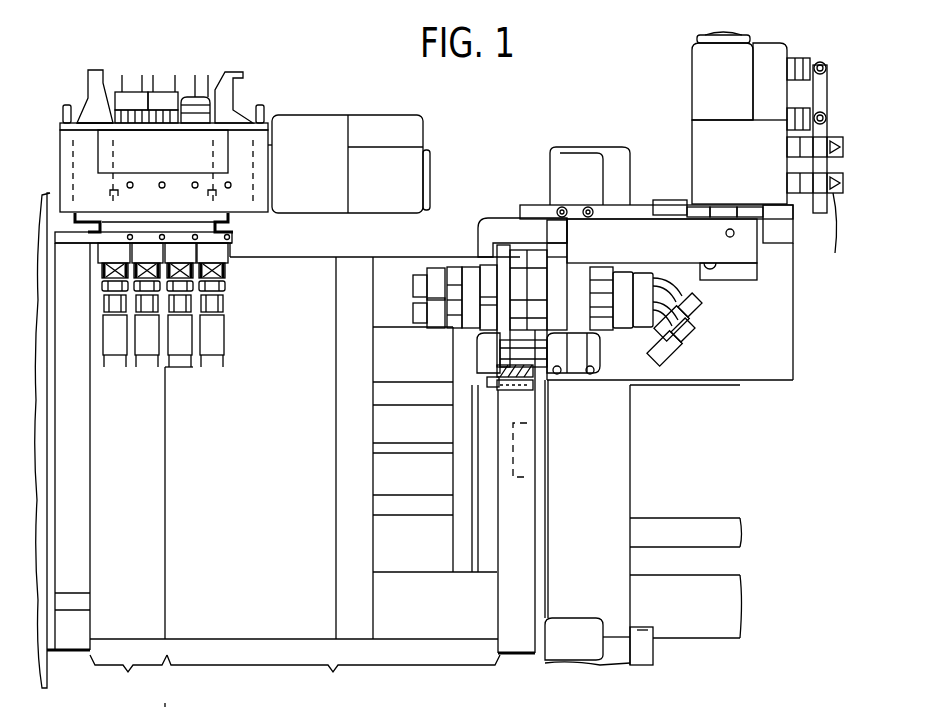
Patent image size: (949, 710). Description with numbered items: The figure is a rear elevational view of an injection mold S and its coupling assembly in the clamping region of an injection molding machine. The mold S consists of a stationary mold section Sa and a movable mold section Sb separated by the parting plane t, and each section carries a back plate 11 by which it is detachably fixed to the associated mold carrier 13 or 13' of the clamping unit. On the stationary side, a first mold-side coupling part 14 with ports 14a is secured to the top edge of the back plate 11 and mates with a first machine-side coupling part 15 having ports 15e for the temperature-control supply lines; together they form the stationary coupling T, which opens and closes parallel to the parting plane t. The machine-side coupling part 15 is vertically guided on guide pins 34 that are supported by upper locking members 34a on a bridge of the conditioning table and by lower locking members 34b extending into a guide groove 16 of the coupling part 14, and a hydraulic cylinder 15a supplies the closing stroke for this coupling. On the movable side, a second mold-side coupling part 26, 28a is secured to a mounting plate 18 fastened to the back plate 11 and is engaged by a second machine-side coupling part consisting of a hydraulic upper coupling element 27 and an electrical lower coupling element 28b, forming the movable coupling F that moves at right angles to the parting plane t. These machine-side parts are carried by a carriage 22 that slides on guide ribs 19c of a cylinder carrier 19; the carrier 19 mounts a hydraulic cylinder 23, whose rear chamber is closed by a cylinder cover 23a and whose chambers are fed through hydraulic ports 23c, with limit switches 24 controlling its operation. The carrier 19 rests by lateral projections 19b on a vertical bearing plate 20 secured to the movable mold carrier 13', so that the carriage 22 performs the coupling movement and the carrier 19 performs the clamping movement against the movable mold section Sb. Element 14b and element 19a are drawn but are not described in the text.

The back plate 11 is at (535, 549).
The stationary mold carrier 13 is at (275, 402).
The movable mold carrier 13' is at (643, 406).
The first mold-side coupling part 14 is at (229, 252).
The ports 14a is at (224, 270).
The bracket 14b is at (80, 97).
The first machine-side coupling part 15 is at (207, 90).
The hydraulic cylinder 15a is at (370, 168).
The ports 15e is at (173, 83).
The guide groove 16 is at (234, 238).
The mounting plate 18 is at (500, 278).
The cylinder carrier 19 is at (506, 206).
The support block 19a is at (480, 234).
The lateral projections 19b is at (778, 237).
The guide ribs 19c is at (553, 200).
The bearing plate 20 is at (783, 346).
The carriage 22 is at (653, 237).
The hydraulic cylinder 23 is at (684, 94).
The cylinder cover 23a is at (697, 40).
The hydraulic ports 23c is at (801, 58).
The limit switches 24 is at (838, 241).
The second mold-side coupling part 26 is at (448, 330).
The hydraulic upper coupling element 27 is at (628, 335).
The second mold-side coupling part 28a is at (497, 370).
The electrical lower coupling element 28b is at (573, 375).
The guide pins 34 is at (272, 170).
The upper locking members 34a is at (101, 72).
The lower locking members 34b is at (235, 220).
The stationary coupling T is at (248, 94).
The injection mold S is at (388, 250).
The movable coupling F is at (405, 341).
The stationary mold section Sa is at (128, 680).
The movable mold section Sb is at (333, 680).
The parting plane t is at (166, 693).